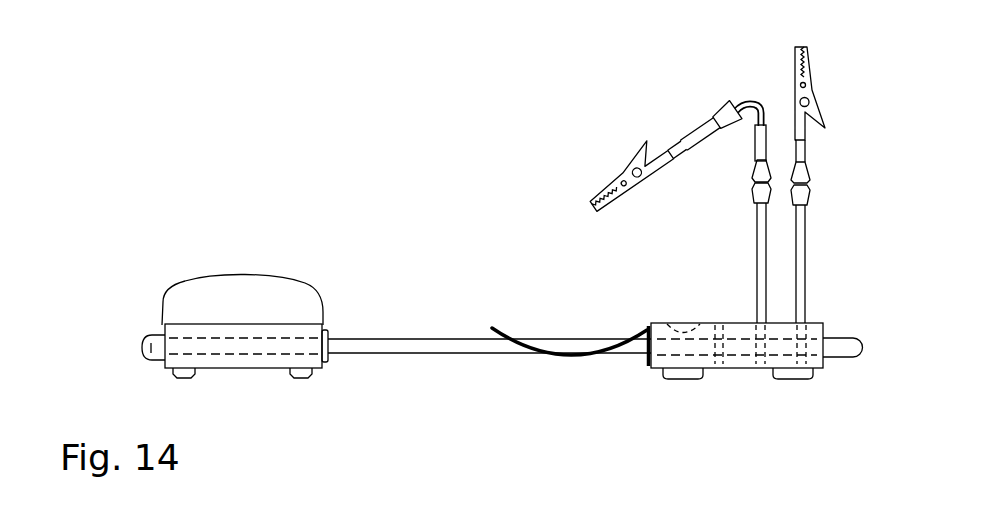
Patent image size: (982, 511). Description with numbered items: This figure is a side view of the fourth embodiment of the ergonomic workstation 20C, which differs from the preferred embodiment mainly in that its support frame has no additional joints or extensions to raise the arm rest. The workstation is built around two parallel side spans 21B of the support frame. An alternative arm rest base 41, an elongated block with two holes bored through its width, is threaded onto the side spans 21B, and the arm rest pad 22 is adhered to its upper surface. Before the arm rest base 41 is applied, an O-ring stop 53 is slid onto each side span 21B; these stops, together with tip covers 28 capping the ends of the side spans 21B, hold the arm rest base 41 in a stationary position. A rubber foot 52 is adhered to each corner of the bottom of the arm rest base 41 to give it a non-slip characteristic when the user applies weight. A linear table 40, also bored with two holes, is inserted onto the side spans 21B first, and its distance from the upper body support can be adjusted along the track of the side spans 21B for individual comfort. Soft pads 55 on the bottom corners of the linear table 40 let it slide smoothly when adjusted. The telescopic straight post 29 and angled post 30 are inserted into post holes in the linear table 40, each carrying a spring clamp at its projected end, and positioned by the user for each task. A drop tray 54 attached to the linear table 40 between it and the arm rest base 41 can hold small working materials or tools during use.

The ergonomic workstation 20C is at (311, 221).
The arm rest pad 22 is at (208, 287).
The alternative arm rest base 41 is at (188, 332).
The tip cover 28 is at (140, 345).
The rubber foot 52 is at (295, 377).
The O-ring stop 53 is at (330, 337).
The side span 21B is at (447, 348).
The drop tray 54 is at (642, 330).
The linear table 40 is at (817, 332).
The soft pad 55 is at (790, 375).
The angled post 30 is at (758, 247).
The straight post 29 is at (800, 252).